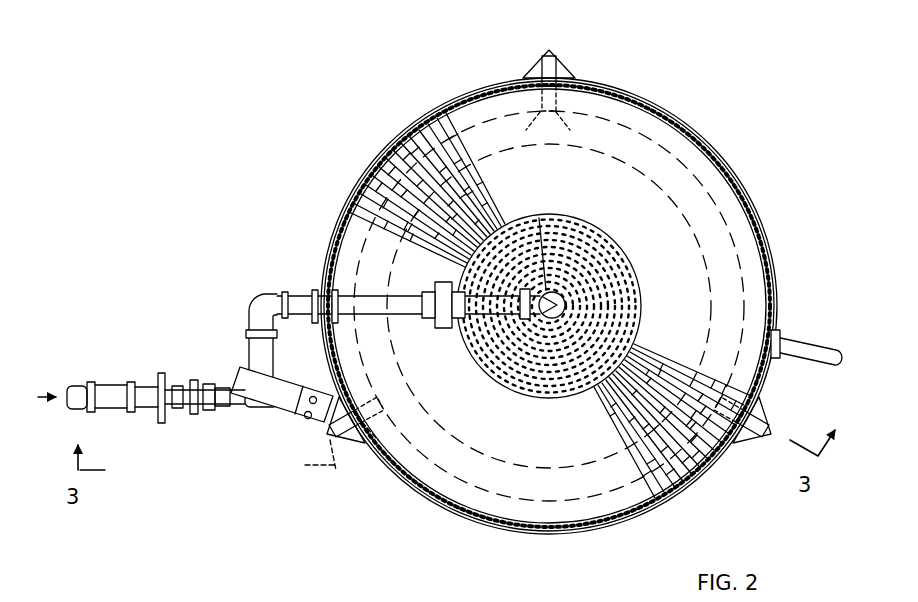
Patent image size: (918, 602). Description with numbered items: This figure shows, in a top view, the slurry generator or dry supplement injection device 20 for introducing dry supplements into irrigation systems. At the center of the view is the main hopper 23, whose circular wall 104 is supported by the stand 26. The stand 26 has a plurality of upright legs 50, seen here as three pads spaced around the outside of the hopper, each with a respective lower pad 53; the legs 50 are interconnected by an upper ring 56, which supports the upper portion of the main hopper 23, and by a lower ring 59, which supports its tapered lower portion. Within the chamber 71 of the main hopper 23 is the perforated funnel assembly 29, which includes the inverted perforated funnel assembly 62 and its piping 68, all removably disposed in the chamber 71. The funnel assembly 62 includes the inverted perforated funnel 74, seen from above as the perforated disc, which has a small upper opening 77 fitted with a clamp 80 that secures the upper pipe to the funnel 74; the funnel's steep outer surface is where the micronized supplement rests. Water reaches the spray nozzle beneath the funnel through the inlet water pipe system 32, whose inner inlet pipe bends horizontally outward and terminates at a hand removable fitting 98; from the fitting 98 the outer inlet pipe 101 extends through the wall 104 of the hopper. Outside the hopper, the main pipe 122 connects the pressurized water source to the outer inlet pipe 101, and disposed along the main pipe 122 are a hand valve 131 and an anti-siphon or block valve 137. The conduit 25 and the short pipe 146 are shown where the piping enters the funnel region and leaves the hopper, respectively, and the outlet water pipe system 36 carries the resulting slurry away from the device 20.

The slurry generator or dry supplement injection device 20 is at (682, 66).
The main hopper 23 is at (674, 127).
The inlet conduit 25 is at (502, 304).
The stand 26 is at (578, 72).
The perforated funnel assembly 29 is at (576, 310).
The inlet water pipe system 32 is at (141, 388).
The outlet water pipe system 36 is at (522, 586).
The upright legs 50 is at (521, 70).
The lower pads 53 is at (564, 107).
The upper ring 56 is at (402, 135).
The lower ring 59 is at (686, 241).
The inverted perforated funnel assembly 62 is at (645, 305).
The piping 68 is at (455, 342).
The chamber 71 is at (692, 177).
The inverted perforated funnel 74 is at (533, 400).
The small upper opening 77 is at (570, 298).
The clamp 80 is at (539, 218).
The hand removable fitting 98 is at (438, 282).
The outer inlet pipe 101 is at (349, 306).
The wall 104 is at (496, 514).
The main pipe 122 is at (244, 336).
The hand valve 131 is at (162, 423).
The anti-siphon or block valve 137 is at (258, 412).
The outlet pipe 146 is at (820, 329).